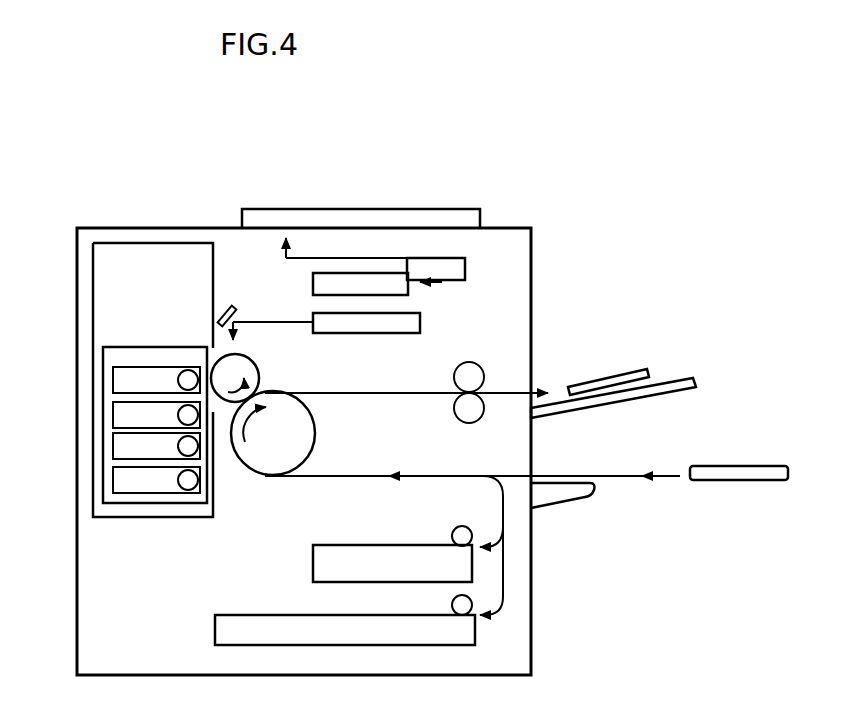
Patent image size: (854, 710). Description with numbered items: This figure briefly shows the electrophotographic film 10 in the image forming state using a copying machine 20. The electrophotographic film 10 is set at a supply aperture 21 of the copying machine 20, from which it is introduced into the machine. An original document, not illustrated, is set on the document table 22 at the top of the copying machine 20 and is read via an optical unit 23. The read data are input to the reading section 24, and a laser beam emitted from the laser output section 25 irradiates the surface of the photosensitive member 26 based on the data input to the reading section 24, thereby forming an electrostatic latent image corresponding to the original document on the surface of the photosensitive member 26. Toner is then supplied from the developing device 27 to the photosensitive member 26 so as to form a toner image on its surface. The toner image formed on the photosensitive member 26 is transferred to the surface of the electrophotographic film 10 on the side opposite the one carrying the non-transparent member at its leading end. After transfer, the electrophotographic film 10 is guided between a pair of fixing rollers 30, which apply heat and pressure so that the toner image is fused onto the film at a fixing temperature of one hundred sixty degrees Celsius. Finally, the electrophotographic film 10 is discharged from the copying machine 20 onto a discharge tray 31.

The electrophotographic film 10 is at (643, 370).
The copying machine 20 is at (540, 254).
The supply aperture 21 is at (535, 472).
The document table 22 is at (458, 213).
The optical unit 23 is at (465, 273).
The reading section 24 is at (400, 277).
The laser output section 25 is at (342, 322).
The photosensitive member 26 is at (250, 367).
The developing device 27 is at (134, 347).
The fixing rollers 30 is at (473, 408).
The discharge tray 31 is at (683, 390).